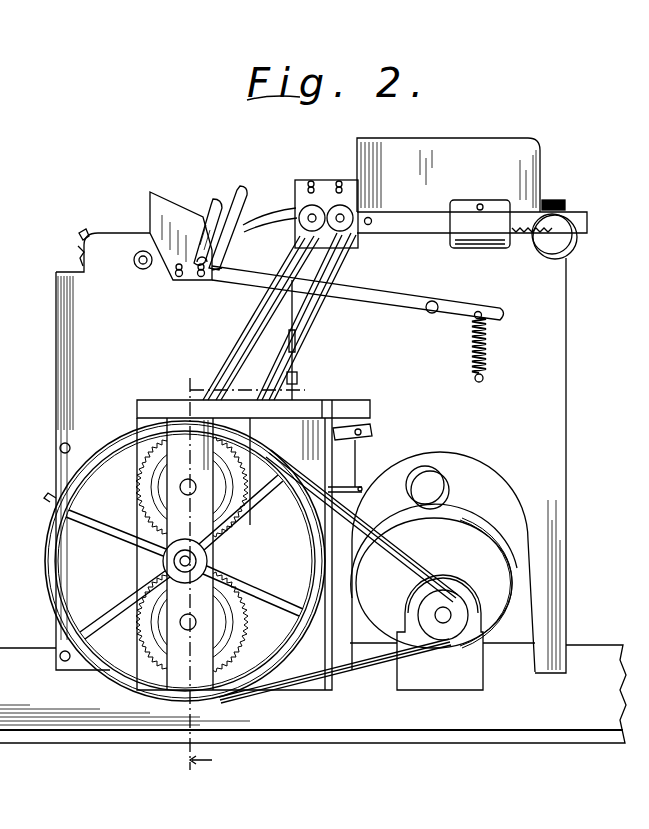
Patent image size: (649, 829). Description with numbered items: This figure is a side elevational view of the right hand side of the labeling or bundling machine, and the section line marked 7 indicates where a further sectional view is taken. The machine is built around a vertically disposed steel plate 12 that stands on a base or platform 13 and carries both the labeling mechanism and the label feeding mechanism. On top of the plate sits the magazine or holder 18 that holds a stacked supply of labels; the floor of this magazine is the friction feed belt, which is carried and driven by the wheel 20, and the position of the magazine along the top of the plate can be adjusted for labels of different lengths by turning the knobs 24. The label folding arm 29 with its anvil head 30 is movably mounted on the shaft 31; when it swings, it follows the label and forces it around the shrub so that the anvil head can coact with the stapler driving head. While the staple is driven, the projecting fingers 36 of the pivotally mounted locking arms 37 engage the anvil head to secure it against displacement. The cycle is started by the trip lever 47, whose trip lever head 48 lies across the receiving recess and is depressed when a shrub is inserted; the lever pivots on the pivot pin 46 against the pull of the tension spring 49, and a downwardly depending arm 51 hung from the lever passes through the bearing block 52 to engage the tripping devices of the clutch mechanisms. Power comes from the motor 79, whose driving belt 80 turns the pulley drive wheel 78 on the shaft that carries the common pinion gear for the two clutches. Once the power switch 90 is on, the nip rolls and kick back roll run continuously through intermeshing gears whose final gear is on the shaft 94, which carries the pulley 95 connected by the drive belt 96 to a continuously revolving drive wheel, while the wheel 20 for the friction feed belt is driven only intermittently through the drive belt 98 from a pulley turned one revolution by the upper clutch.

The section line 7- 7 is at (243, 562).
The steel plate 12 is at (560, 333).
The base or platform 13 is at (592, 698).
The magazine or holder 18 is at (437, 145).
The roller (wheel) 20 is at (357, 208).
The knob 24 is at (577, 250).
The label folding arm 29 is at (80, 250).
The anvil head 30 is at (83, 233).
The shaft 31 is at (137, 267).
The projecting finger 36 is at (214, 226).
The locking arm 37 is at (245, 190).
The pivot pin 46 is at (437, 303).
The trip lever 47 is at (392, 294).
The trip lever head 48 is at (157, 195).
The tension spring 49 is at (487, 357).
The downwardly depending arm 51 is at (296, 355).
The bearing block 52 is at (300, 378).
The pulley drive wheel 78 is at (110, 442).
The motor 79 is at (458, 511).
The driving belt 80 is at (338, 670).
The power switch 90 is at (52, 494).
The shaft 94 is at (313, 205).
The pulley 95 is at (328, 196).
The drive belt 96 is at (213, 340).
The drive belt 98 is at (335, 274).